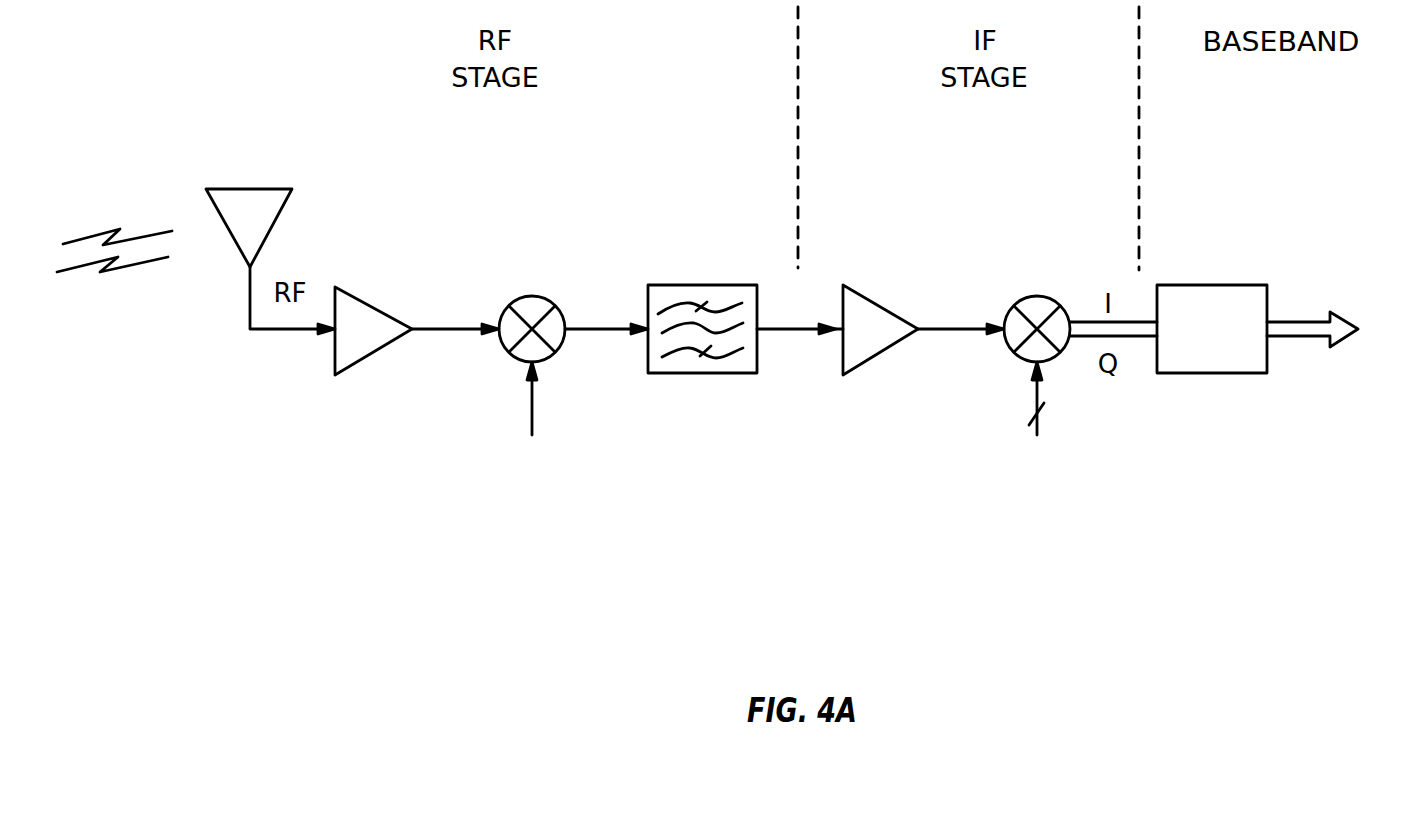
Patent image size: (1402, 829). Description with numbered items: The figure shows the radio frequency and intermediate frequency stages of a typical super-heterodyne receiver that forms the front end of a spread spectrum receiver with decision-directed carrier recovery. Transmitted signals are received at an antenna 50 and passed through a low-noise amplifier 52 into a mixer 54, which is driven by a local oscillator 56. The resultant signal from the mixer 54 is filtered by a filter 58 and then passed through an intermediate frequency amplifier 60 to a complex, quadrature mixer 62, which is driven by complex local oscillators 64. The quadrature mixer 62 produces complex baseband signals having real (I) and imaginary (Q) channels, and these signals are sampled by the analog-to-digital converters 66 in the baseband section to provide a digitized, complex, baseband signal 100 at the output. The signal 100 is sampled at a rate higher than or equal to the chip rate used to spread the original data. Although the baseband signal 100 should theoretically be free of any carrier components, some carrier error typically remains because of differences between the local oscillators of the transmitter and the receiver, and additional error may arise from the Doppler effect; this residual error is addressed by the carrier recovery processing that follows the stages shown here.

The antenna 50 is at (273, 226).
The low-noise amplifier 52 is at (373, 303).
The mixer 54 is at (543, 292).
The local oscillator 56 is at (530, 512).
The filter 58 is at (713, 283).
The intermediate frequency amplifier 60 is at (882, 303).
The complex quadrature mixer 62 is at (1047, 292).
The complex local oscillators 64 is at (1037, 508).
The analog-to-digital converters 66 is at (1222, 283).
The digitized complex baseband signal 100 is at (1292, 338).